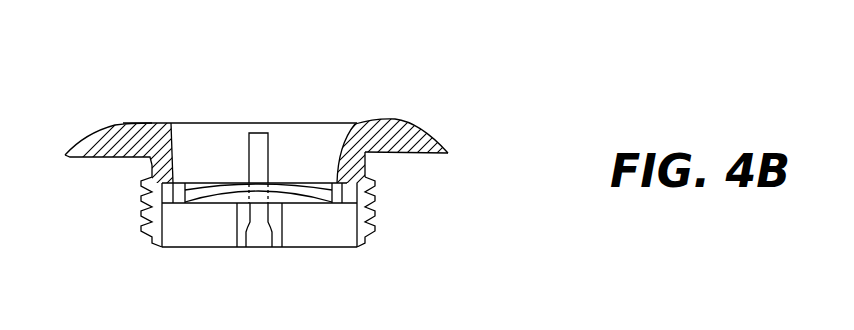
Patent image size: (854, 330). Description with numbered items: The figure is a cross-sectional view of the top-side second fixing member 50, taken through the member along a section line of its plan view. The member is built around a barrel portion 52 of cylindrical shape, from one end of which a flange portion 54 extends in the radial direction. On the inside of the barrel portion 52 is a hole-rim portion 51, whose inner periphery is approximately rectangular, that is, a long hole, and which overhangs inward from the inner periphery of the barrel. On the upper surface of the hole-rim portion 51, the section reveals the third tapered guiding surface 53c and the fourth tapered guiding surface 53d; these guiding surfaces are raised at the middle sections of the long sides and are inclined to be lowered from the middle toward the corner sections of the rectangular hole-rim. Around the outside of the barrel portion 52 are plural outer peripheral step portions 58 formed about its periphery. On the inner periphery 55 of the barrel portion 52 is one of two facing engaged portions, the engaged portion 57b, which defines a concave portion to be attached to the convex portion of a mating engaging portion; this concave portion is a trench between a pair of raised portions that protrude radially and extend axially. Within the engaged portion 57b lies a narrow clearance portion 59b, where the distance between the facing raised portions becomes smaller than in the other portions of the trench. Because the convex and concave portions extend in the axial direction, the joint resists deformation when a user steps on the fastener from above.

The top-side second fixing member 50 is at (133, 287).
The hole-rim portion 51 is at (343, 126).
The barrel portion 52 is at (171, 123).
The third tapered guiding surface 53c is at (210, 183).
The fourth tapered guiding surface 53d is at (300, 183).
The flange portion 54 is at (390, 120).
The inner periphery 55 is at (352, 223).
The engaged portion 57b is at (247, 228).
The outer peripheral step portions 58 is at (373, 189).
The narrow clearance portion 59b is at (257, 232).